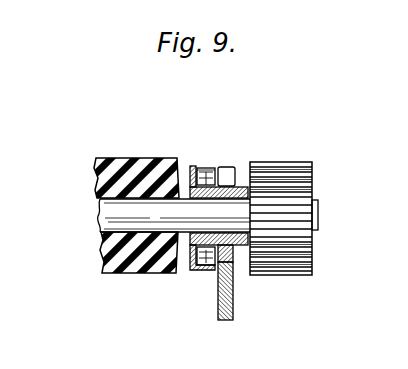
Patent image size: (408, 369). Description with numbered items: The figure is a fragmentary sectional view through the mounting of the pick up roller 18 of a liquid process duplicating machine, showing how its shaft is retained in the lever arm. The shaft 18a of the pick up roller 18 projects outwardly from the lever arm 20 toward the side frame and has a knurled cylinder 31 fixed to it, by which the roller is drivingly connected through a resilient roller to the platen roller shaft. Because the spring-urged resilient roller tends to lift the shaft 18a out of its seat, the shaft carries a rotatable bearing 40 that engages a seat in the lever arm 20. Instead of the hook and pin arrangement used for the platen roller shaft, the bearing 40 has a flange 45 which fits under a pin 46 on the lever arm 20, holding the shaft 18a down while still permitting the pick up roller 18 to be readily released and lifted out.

The pick up roller 18 is at (113, 158).
The shaft 18a is at (98, 210).
The lever arm 20 is at (219, 312).
The knurled cylinder 31 is at (292, 270).
The bearing 40 is at (240, 186).
The flange 45 is at (195, 166).
The pin 46 is at (203, 268).